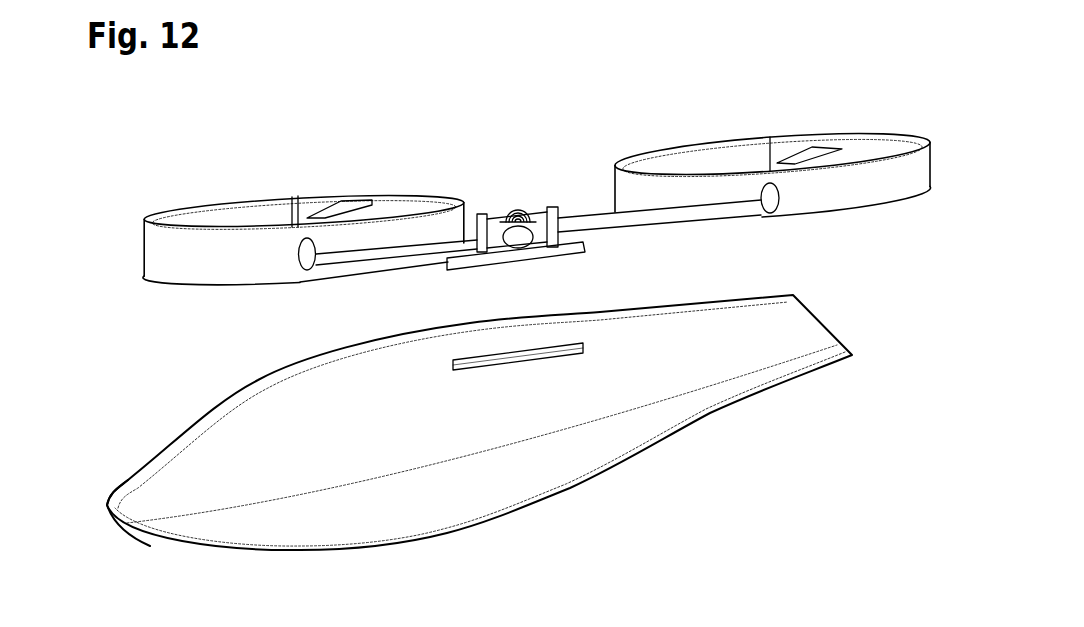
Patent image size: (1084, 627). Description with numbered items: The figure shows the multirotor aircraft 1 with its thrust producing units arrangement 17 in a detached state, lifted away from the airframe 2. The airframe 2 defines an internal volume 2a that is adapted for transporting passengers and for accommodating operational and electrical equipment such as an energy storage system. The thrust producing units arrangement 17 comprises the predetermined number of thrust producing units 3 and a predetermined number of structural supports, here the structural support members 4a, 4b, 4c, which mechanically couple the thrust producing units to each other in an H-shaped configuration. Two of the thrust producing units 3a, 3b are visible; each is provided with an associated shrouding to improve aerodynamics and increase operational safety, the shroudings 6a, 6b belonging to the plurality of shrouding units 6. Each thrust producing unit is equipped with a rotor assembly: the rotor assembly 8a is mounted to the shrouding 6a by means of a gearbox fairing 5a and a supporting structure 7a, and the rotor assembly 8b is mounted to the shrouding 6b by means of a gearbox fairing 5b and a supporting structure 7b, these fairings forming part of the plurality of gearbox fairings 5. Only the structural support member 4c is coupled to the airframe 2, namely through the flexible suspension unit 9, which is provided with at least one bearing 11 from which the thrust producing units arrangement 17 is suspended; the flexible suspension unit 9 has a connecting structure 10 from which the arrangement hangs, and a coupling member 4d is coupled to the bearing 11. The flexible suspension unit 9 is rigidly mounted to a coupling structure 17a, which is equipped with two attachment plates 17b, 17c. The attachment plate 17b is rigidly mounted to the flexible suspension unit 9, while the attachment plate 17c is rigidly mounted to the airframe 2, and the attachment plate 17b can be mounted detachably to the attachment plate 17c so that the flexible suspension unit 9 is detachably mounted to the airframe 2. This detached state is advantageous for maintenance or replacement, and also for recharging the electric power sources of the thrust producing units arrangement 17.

The multirotor aircraft 1 is at (525, 199).
The airframe 2 is at (448, 418).
The internal volume 2a is at (170, 483).
The predetermined number of thrust producing units 3 is at (525, 199).
The thrust producing unit 3a is at (279, 222).
The thrust producing unit 3b is at (782, 147).
The structural support member 4a is at (319, 254).
The structural support member 4b is at (782, 201).
The structural support member 4c is at (708, 177).
The coupling member 4d is at (512, 167).
The plurality of gearbox fairings 5 is at (288, 212).
The gearbox fairing 5a is at (300, 220).
The gearbox fairing 5b is at (770, 148).
The plurality of shrouding units 6 is at (172, 292).
The shrouding 6a is at (158, 249).
The shrouding 6b is at (902, 183).
The supporting structure 7a is at (358, 151).
The rotor assembly 8a is at (345, 197).
The supporting structure 7b is at (837, 101).
The rotor assembly 8b is at (814, 139).
The flexible suspension unit 9 is at (537, 198).
The connecting structure 10 is at (481, 201).
The bearing 11 is at (502, 201).
The thrust producing units arrangement 17 is at (314, 299).
The coupling structure 17a is at (569, 339).
The attachment plate 17b is at (482, 262).
The attachment plate 17c is at (542, 352).